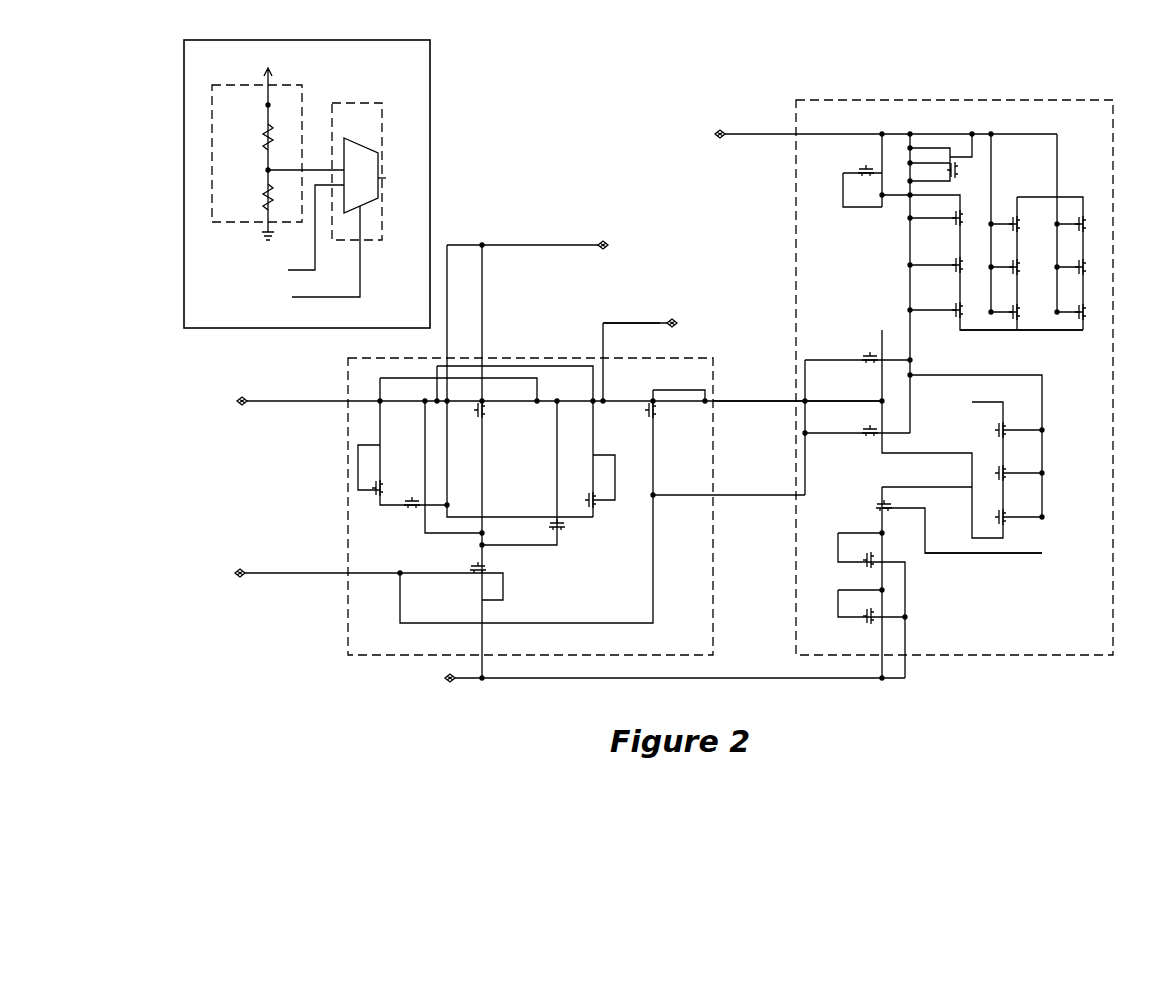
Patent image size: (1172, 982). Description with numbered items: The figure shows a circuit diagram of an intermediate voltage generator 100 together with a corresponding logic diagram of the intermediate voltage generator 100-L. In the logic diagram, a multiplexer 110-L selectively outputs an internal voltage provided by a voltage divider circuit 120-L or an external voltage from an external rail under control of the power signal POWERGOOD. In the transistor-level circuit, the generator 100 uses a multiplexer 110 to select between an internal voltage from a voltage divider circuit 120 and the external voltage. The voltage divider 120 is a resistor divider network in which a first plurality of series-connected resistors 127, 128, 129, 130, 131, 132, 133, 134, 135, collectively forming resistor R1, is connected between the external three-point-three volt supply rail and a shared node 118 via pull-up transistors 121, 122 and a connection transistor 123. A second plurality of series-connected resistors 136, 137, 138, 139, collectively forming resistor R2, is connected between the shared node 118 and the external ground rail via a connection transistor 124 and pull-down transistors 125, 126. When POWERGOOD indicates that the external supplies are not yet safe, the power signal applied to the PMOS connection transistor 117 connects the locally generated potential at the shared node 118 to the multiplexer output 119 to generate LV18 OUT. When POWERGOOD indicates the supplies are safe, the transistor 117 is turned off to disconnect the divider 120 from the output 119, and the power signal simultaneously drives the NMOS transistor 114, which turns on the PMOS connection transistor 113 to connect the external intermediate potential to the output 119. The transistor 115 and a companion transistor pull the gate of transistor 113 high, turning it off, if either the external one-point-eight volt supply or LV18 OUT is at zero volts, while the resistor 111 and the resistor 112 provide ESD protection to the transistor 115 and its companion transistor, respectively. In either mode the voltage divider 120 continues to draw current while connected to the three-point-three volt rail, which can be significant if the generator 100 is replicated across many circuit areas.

The intermediate voltage generator 100 is at (1119, 68).
The multiplexer 110 is at (372, 656).
The voltage divider circuit 120 is at (815, 656).
The resistor 111 is at (376, 491).
The resistor 112 is at (588, 501).
The PMOS connection transistor 113 is at (486, 418).
The NMOS transistor 114 is at (470, 573).
The transistor 115 is at (410, 515).
The PMOS connection transistor 117 is at (659, 418).
The shared node 118 is at (755, 408).
The multiplexer output 119 is at (640, 321).
The pull-up transistor 121 is at (866, 172).
The pull-up transistor 122 is at (962, 172).
The connection transistor 123 is at (866, 360).
The connection transistor 124 is at (866, 433).
The pull-down transistor 125 is at (870, 566).
The pull-down transistor 126 is at (870, 620).
The series-connected resistor 127 is at (962, 224).
The series-connected resistor 128 is at (962, 270).
The series-connected resistor 129 is at (962, 314).
The series-connected resistor 130 is at (1020, 228).
The series-connected resistor 131 is at (1020, 272).
The series-connected resistor 132 is at (1020, 316).
The series-connected resistor 133 is at (1086, 228).
The series-connected resistor 134 is at (1086, 272).
The series-connected resistor 135 is at (1086, 316).
The series-connected resistor 136 is at (1002, 432).
The series-connected resistor 137 is at (1002, 475).
The series-connected resistor 138 is at (1002, 519).
The series-connected resistor 139 is at (880, 510).
The resistor R1 is at (1073, 156).
The resistor R2 is at (1042, 580).
The intermediate voltage generator logic diagram 100-L is at (307, 184).
The multiplexer 110-L is at (361, 103).
The voltage divider circuit 120-L is at (245, 85).